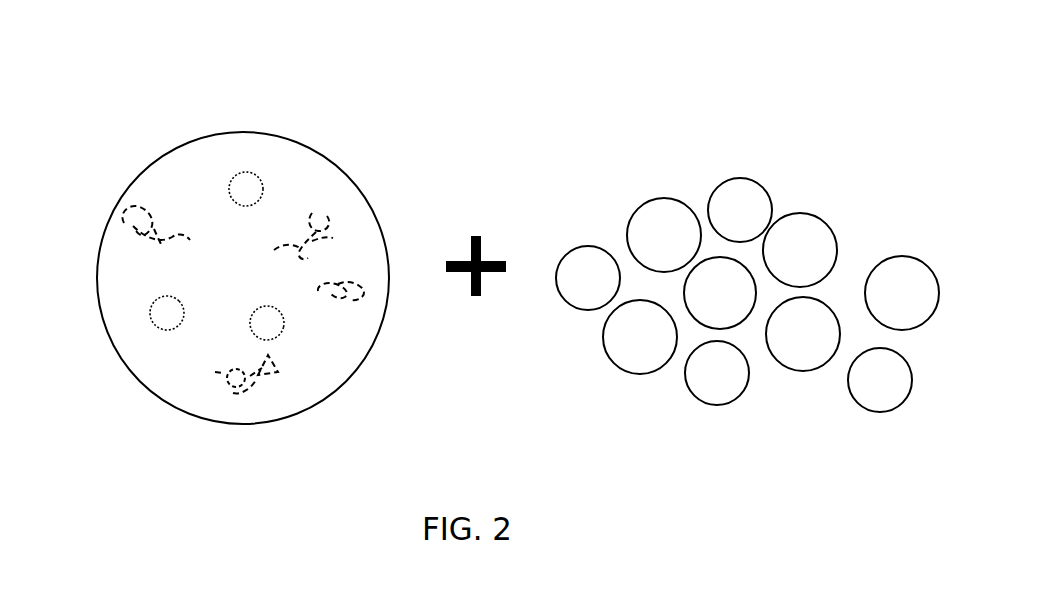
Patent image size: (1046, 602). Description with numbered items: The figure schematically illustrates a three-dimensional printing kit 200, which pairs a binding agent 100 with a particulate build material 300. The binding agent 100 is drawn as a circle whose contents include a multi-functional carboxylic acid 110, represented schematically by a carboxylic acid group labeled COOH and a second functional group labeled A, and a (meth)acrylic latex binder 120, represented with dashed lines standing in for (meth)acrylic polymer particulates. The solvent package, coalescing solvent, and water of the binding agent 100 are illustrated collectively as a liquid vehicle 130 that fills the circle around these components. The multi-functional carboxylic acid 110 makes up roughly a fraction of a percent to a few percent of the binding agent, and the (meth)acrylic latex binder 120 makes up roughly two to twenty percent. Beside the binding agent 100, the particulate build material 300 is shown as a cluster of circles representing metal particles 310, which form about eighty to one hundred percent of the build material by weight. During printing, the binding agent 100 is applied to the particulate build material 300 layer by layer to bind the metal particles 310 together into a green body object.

The binding agent 100 is at (158, 129).
The multi-functional carboxylic acid 110 is at (246, 186).
The (meth)acrylic latex binder 120 is at (235, 400).
The liquid vehicle 130 is at (170, 367).
The three-dimensional printing kit 200 is at (334, 40).
The particulate build material 300 is at (662, 157).
The metal particles 310 is at (818, 243).